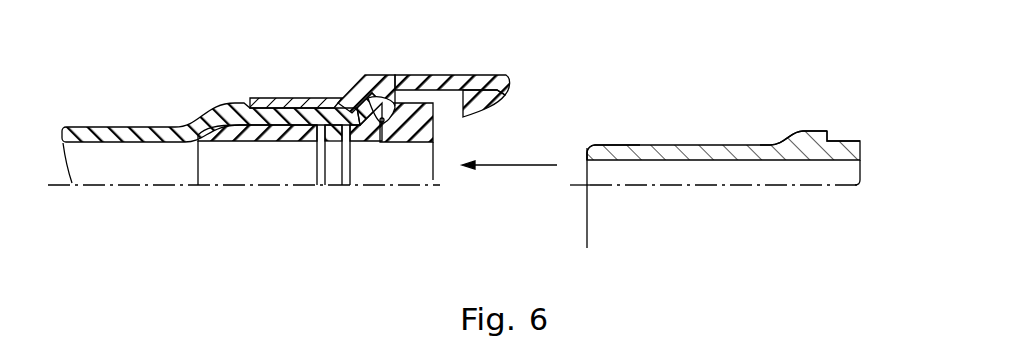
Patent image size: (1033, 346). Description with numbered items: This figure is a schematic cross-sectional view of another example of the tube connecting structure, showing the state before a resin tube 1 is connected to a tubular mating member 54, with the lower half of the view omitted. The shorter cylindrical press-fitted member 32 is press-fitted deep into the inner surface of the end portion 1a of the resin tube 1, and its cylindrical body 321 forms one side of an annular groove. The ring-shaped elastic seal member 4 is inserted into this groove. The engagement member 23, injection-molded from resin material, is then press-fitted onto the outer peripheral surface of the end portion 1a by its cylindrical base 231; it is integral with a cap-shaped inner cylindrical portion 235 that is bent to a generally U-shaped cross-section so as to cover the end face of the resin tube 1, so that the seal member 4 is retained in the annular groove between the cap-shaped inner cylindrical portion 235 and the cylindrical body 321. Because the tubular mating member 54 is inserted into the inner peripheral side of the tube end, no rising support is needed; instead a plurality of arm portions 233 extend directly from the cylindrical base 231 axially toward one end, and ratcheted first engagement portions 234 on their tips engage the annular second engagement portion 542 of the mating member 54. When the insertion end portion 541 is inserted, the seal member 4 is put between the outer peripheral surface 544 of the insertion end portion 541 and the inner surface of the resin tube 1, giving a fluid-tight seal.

The resin tube 1 is at (105, 124).
The end portion of the resin tube 1a is at (333, 102).
The engagement member 23 is at (452, 119).
The cylindrical base 231 is at (290, 102).
The arm portion 233 is at (414, 75).
The ratcheted first engagement portion 234 is at (480, 113).
The cap-shaped inner cylindrical portion 235 is at (393, 143).
The shorter cylindrical press-fitted member 32 is at (249, 146).
The cylindrical body 321 is at (293, 133).
The ring-shaped elastic seal member 4 is at (336, 172).
The tubular mating member 54 is at (723, 158).
The insertion end portion 541 is at (613, 152).
The annular second engagement portion 542 is at (818, 142).
The outer peripheral surface 544 is at (753, 142).